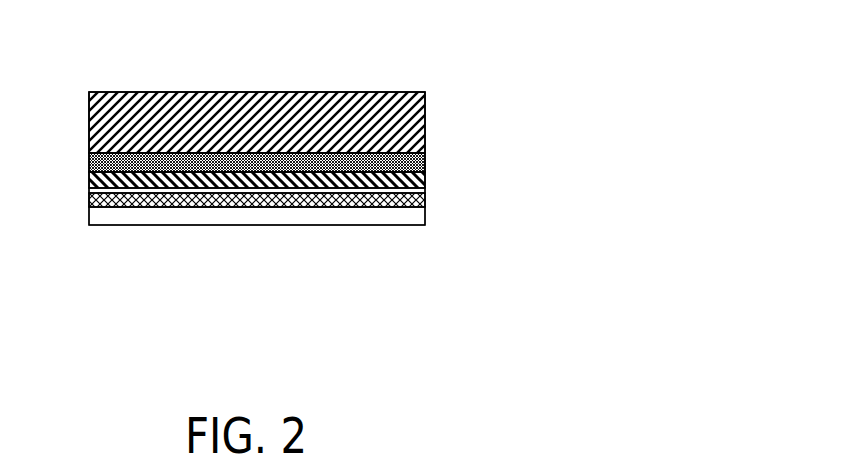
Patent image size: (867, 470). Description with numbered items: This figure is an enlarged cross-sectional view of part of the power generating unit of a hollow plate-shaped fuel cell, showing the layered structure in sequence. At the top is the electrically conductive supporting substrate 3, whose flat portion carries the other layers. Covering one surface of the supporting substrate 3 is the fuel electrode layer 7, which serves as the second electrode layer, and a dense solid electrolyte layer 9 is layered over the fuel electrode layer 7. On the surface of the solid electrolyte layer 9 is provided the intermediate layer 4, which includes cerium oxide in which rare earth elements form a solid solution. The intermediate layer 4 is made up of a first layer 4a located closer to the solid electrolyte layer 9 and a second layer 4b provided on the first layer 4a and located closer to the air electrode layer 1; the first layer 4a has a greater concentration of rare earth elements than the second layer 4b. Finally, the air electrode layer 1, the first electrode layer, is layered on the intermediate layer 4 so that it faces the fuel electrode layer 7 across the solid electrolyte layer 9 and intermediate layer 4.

The air electrode layer 1 is at (216, 215).
The electrically conductive supporting substrate 3 is at (283, 108).
The intermediate layer 4 is at (324, 247).
The first layer 4a is at (425, 193).
The second layer 4b is at (425, 205).
The fuel electrode layer 7 is at (425, 160).
The solid electrolyte layer 9 is at (425, 181).